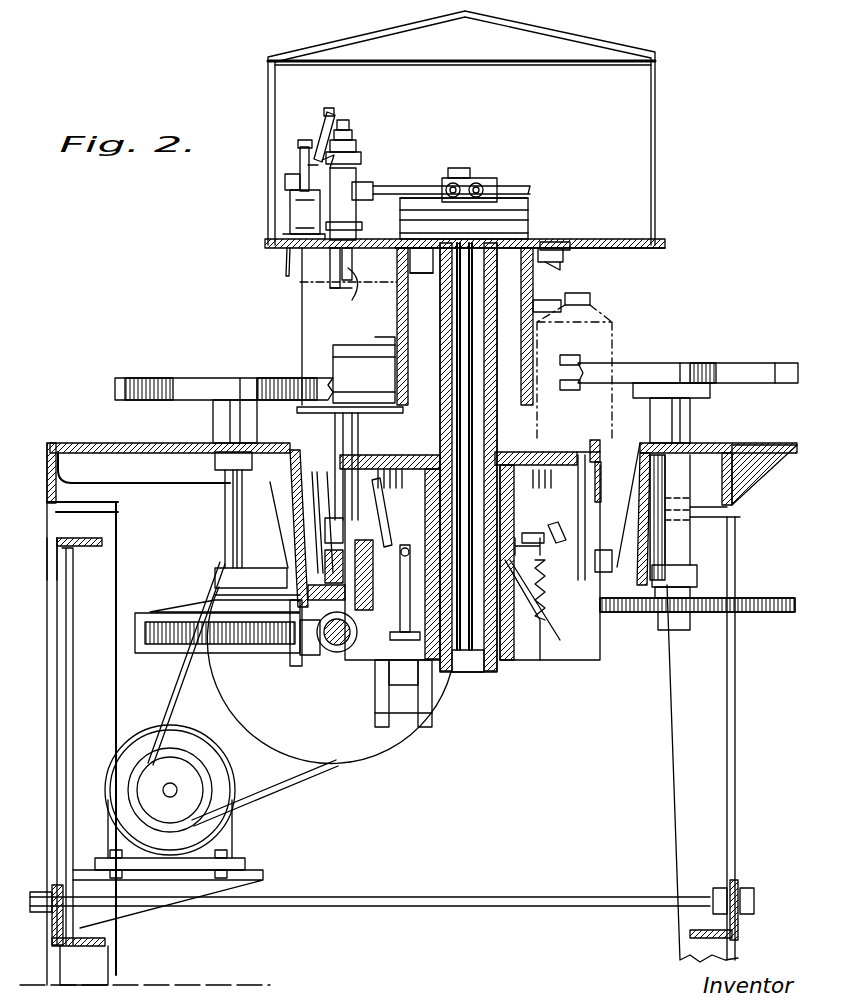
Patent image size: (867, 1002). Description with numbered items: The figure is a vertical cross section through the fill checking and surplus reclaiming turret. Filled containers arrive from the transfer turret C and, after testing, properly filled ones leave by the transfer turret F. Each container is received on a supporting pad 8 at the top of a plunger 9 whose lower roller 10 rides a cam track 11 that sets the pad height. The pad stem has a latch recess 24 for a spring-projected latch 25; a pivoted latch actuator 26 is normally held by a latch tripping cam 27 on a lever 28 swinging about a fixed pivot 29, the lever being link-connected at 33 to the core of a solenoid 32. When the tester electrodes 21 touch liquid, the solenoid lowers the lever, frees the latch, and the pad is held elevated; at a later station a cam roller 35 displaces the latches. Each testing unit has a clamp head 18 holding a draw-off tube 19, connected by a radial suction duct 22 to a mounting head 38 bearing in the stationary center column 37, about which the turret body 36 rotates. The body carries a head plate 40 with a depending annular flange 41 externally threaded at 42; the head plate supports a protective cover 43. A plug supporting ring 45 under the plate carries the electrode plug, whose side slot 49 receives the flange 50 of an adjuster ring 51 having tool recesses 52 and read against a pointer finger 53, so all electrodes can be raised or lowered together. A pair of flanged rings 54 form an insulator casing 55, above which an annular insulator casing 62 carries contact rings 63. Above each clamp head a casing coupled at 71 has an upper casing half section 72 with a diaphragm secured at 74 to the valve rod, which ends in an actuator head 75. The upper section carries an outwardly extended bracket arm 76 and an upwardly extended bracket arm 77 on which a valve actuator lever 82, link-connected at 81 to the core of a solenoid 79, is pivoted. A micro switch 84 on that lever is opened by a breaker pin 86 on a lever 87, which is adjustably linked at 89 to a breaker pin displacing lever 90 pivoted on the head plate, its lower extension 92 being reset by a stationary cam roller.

The protective cover 43 is at (302, 60).
The head plate 40 is at (612, 243).
The annular insulator casing 62 is at (464, 217).
The depending annular flange 41 is at (464, 227).
The radial suction duct 22 is at (414, 187).
The mounting head 38 is at (480, 180).
The clamp head 18 is at (356, 206).
The contact ring 63 is at (363, 189).
The coupling 71 is at (361, 172).
The upper casing half section 72 is at (357, 156).
The upwardly extended bracket arm 77 is at (356, 148).
The actuator head 75 is at (350, 137).
The micro switch 84 is at (320, 140).
The breaker pin 86 is at (333, 114).
The lever 87 is at (338, 124).
The valve actuator lever 82 is at (300, 143).
The link connection 81 is at (302, 157).
The outwardly extended bracket arm 76 is at (318, 166).
The adjustable link connection 89 is at (287, 180).
The breaker pin displacing lever 90 is at (300, 196).
The diaphragm securing means 74 is at (303, 213).
The solenoid 79 is at (296, 238).
The lower end extension 92 is at (287, 262).
The side slot 49 is at (356, 226).
The plug supporting ring 45 is at (330, 272).
The draw-off tube 19 is at (330, 290).
The tester electrodes 21 is at (355, 293).
The adjuster ring 51 is at (392, 345).
The turret body 36 is at (508, 442).
The center column 37 is at (490, 345).
The pointer finger 53 is at (563, 255).
The flange 50 is at (562, 268).
The tool receiving recesses 52 is at (575, 272).
The transfer turret C is at (152, 378).
The transfer turret F is at (744, 363).
The supporting pad 8 is at (300, 413).
The latch recess 24 is at (334, 448).
The plunger 9 is at (358, 436).
The roller 10 is at (333, 518).
The spring-projected latch 25 is at (392, 455).
The latch actuator 26 is at (382, 525).
The latch tripping cam 27 is at (395, 540).
The lever 28 is at (425, 550).
The cam track 11 is at (560, 591).
The link connection 33 is at (400, 603).
The cam roller 35 is at (545, 540).
The fixed pivot 29 is at (532, 599).
The solenoid 32 is at (385, 697).
The insulator casing 55 is at (515, 212).
The flanged rings 54 is at (520, 222).
The external threads 42 is at (548, 243).